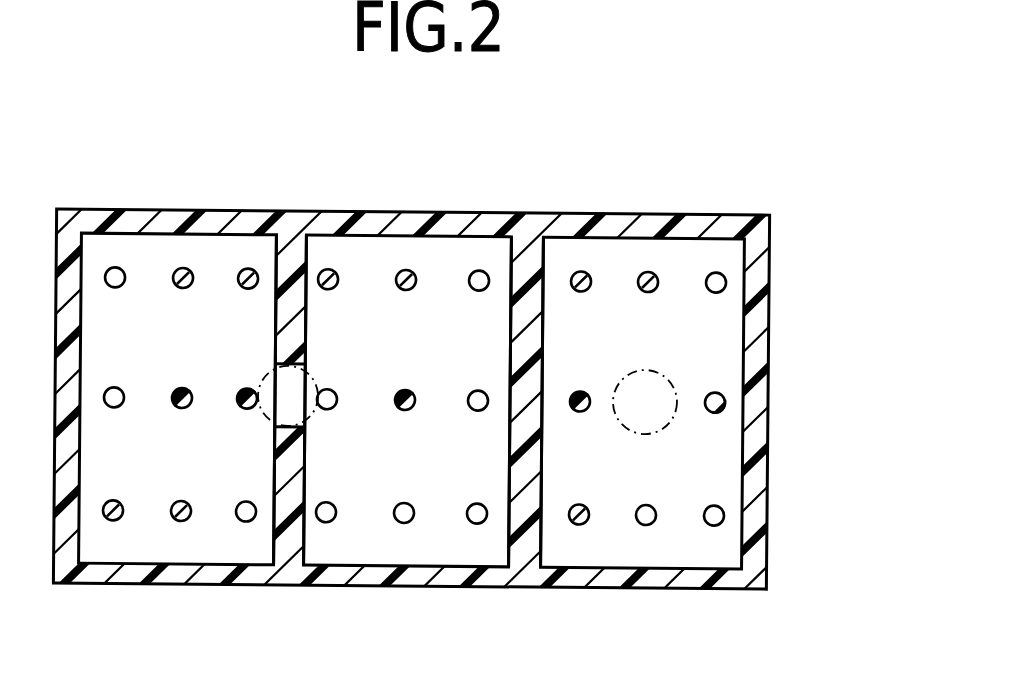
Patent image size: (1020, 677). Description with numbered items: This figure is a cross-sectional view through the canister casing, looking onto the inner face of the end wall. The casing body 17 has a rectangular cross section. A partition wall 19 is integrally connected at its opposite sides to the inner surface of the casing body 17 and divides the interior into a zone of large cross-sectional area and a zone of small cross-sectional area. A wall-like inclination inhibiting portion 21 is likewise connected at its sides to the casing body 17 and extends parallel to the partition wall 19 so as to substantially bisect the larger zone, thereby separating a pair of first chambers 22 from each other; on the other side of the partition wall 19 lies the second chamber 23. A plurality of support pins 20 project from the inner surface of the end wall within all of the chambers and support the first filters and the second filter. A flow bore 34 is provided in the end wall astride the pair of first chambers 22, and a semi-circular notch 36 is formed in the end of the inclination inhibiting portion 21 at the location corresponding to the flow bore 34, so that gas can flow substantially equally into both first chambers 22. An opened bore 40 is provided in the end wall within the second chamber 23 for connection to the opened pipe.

The casing body 17 is at (380, 226).
The partition wall 19 is at (534, 464).
The support pins 20 is at (247, 270).
The inclination inhibiting portion 21 is at (291, 462).
The first chambers 22 is at (430, 368).
The second chamber 23 is at (686, 488).
The flow bore 34 is at (307, 371).
The semi-circular notch 36 is at (290, 424).
The opened bore 40 is at (668, 378).